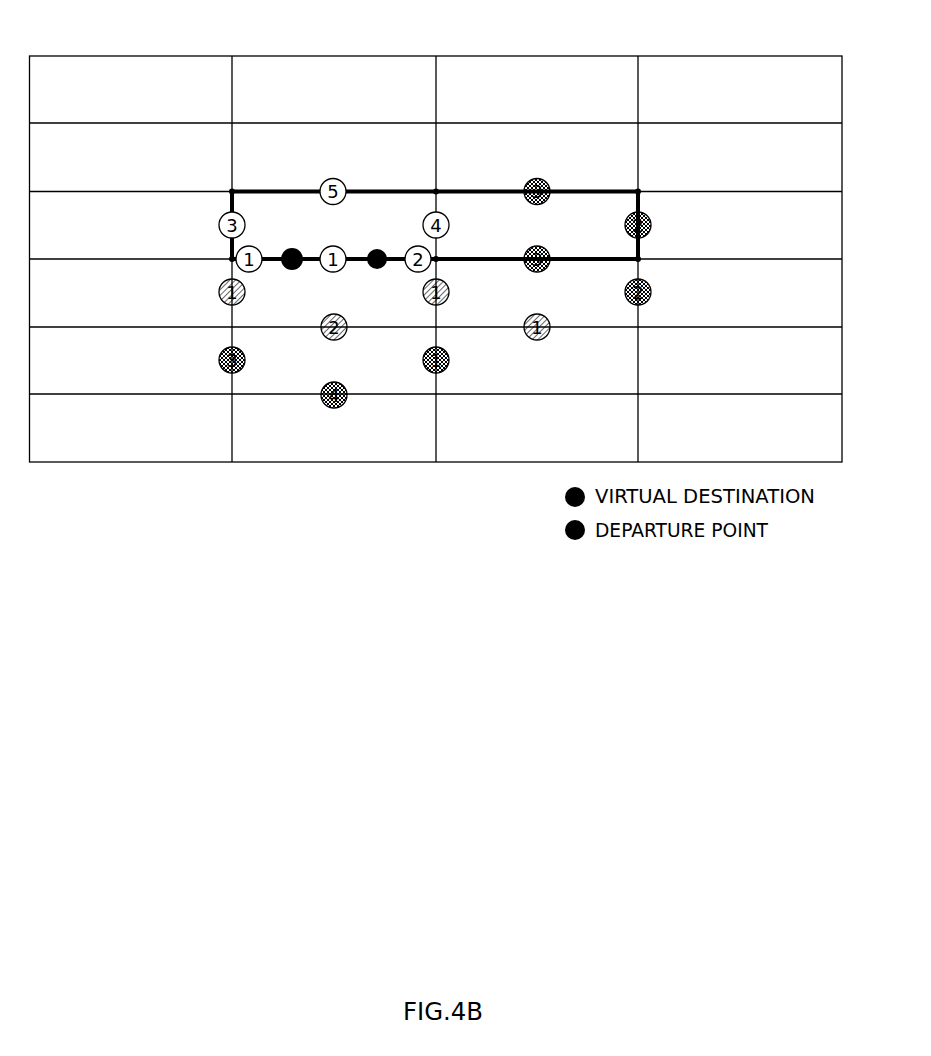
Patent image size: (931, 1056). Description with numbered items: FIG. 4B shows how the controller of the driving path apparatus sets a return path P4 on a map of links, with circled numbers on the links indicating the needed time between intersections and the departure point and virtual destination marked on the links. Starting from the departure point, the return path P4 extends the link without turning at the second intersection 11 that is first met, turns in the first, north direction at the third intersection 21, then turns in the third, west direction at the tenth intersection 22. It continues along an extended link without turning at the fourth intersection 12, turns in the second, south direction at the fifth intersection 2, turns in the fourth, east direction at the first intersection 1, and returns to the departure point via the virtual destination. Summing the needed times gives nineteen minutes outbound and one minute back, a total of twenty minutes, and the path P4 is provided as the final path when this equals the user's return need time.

The return path P4 is at (274, 191).
The first intersection 1 is at (231, 259).
The fifth intersection 2 is at (231, 191).
The second intersection 11 is at (437, 259).
The fourth intersection 12 is at (437, 191).
The third intersection 21 is at (640, 259).
The tenth intersection 22 is at (640, 191).